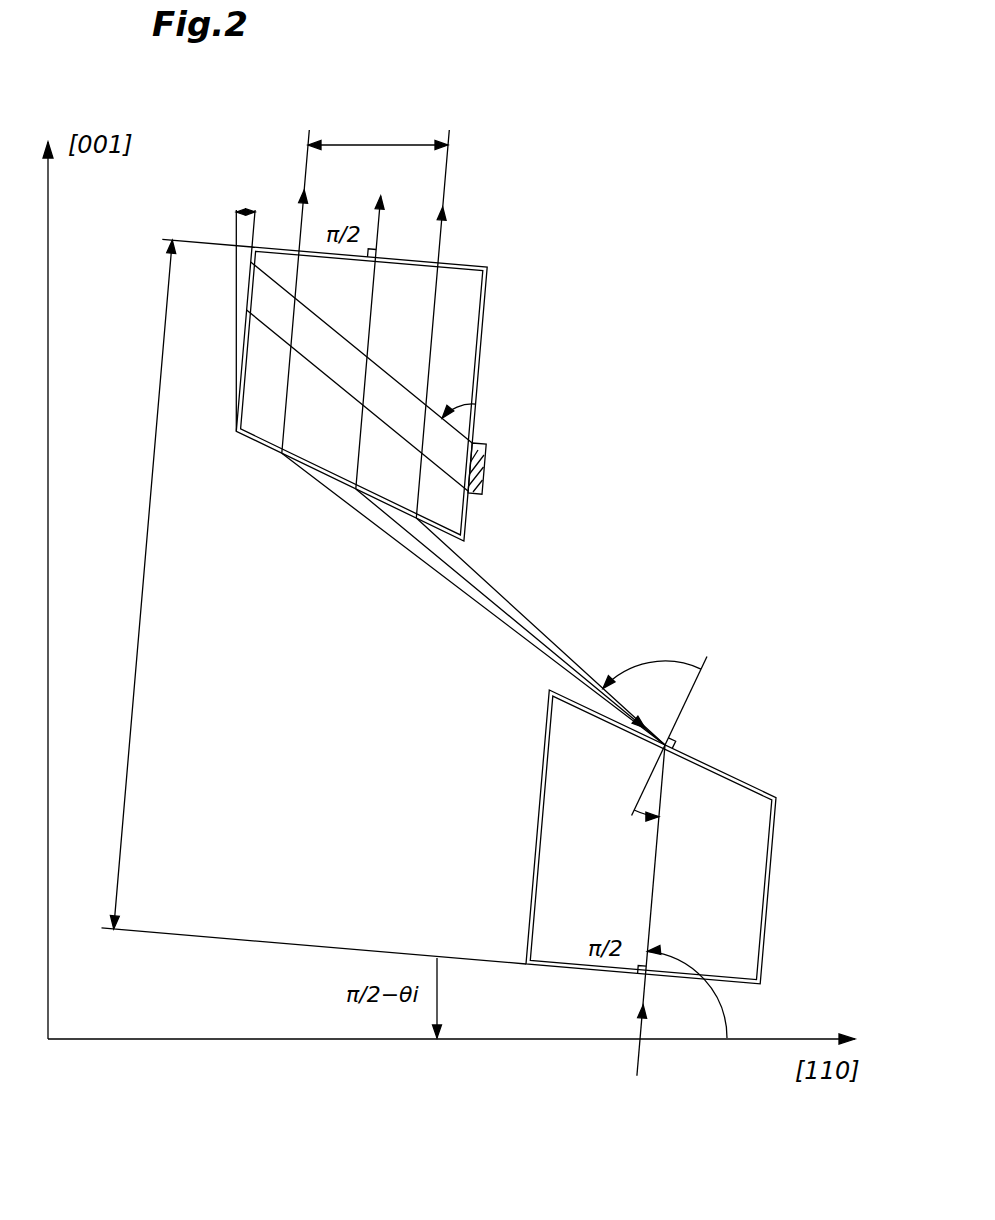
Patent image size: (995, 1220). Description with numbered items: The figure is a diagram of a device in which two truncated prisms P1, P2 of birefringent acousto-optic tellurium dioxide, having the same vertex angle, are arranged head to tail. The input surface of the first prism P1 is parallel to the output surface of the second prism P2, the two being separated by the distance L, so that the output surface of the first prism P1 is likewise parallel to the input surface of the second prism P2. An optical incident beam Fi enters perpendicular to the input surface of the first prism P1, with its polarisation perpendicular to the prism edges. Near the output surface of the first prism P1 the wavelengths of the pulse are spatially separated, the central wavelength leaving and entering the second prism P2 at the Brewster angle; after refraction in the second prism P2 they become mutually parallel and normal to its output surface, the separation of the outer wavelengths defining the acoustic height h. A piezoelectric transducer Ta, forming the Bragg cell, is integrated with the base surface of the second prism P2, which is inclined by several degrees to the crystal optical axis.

The first truncated prism P1 is at (537, 831).
The second truncated prism P2 is at (484, 338).
The piezoelectric transducer Ta is at (487, 462).
The optical incident beam Fi is at (643, 998).
The distance between prisms L is at (312, 601).
The acoustic height h is at (378, 133).